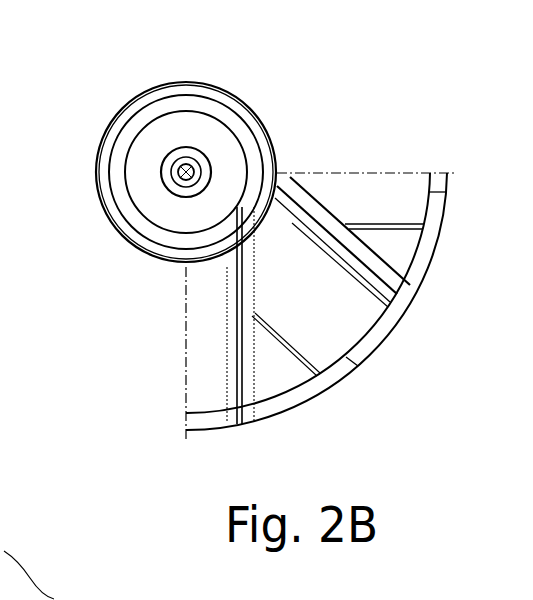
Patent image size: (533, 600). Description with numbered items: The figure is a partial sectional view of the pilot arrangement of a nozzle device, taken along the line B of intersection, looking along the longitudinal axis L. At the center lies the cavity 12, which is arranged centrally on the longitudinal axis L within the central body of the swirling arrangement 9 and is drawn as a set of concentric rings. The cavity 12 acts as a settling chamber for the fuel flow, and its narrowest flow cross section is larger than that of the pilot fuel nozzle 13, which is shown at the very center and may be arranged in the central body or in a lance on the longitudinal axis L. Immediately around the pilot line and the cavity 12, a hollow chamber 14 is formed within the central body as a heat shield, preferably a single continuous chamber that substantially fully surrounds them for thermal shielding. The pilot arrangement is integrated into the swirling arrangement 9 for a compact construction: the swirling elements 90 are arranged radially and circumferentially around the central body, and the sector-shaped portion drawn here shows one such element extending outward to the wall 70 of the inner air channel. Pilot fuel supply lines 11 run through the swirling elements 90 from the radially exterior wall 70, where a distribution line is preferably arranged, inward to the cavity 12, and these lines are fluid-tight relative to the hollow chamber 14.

The swirling arrangement 9 is at (356, 323).
The wall of the inner air channel 70 is at (425, 250).
The swirling elements 90 is at (407, 288).
The pilot fuel supply lines 11 is at (405, 320).
The cavity 12 is at (140, 160).
The pilot fuel nozzle 13 is at (185, 190).
The hollow chamber 14 is at (210, 158).
The longitudinal axis L is at (183, 152).
The line of intersection B is at (65, 104).